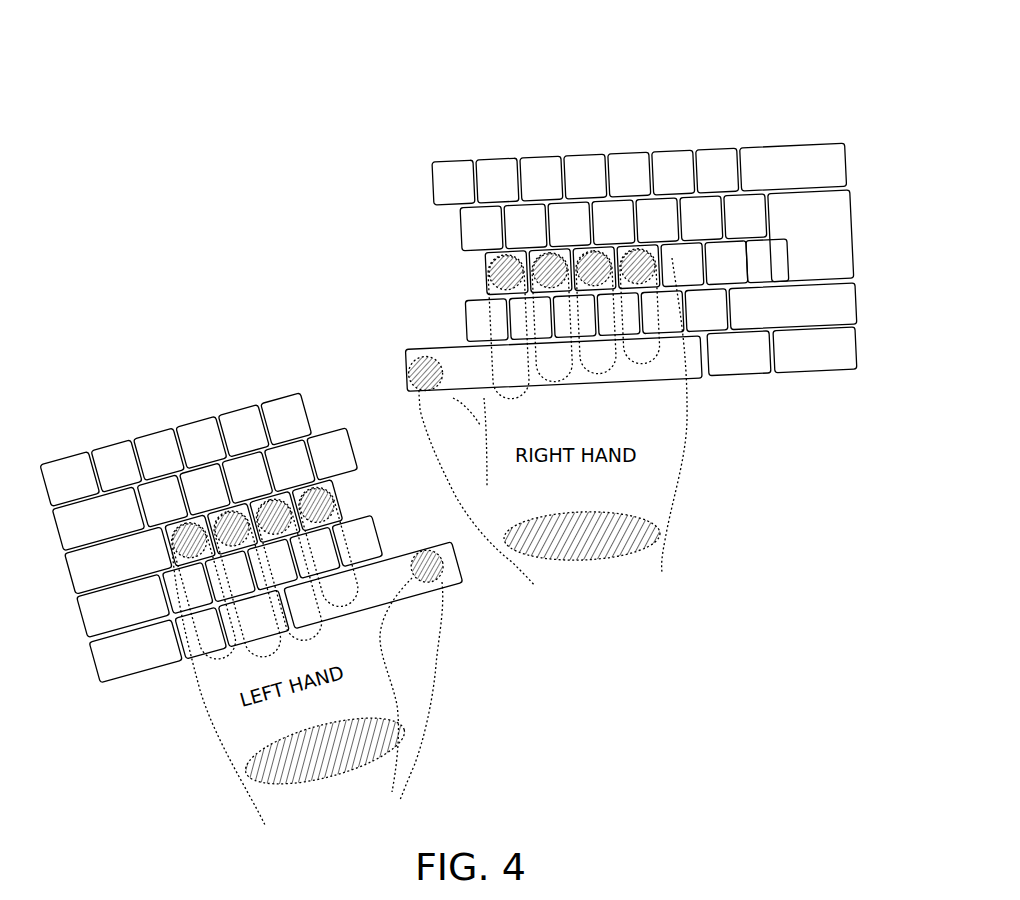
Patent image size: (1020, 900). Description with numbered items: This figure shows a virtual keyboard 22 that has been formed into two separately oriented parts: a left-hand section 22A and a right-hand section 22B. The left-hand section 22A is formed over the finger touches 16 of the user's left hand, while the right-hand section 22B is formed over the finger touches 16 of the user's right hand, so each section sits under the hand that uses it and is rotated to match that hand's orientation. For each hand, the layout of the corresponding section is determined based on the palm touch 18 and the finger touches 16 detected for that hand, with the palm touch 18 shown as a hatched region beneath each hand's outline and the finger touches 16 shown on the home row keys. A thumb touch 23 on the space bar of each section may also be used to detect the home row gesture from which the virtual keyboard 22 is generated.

The virtual keyboard 22 is at (449, 349).
The left-hand section 22A is at (251, 524).
The right-hand section 22B is at (628, 245).
The finger touch 16 is at (412, 403).
The palm touch 18 is at (480, 649).
The thumb touch 23 is at (422, 474).